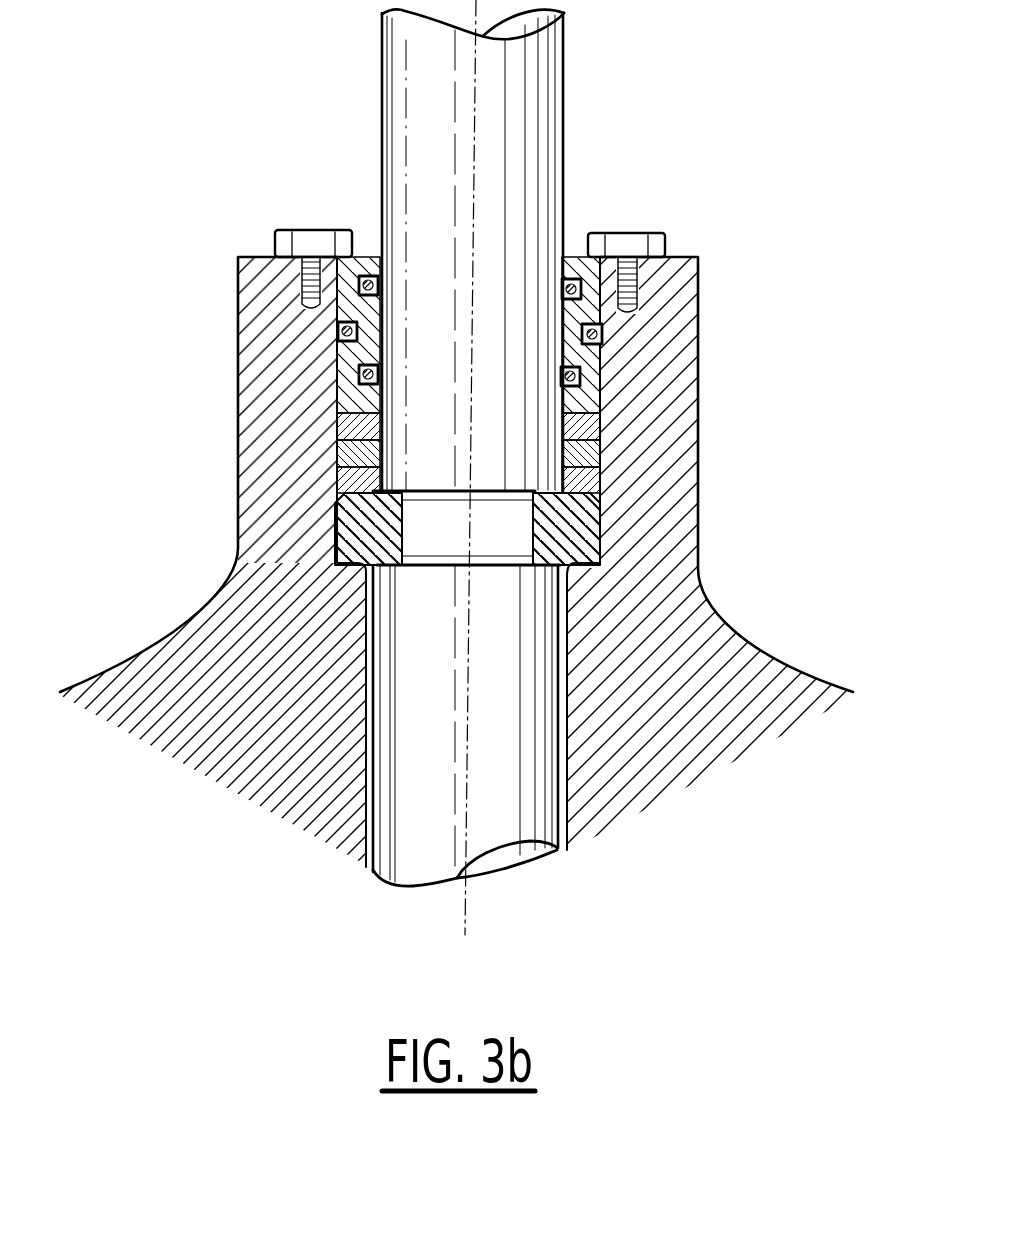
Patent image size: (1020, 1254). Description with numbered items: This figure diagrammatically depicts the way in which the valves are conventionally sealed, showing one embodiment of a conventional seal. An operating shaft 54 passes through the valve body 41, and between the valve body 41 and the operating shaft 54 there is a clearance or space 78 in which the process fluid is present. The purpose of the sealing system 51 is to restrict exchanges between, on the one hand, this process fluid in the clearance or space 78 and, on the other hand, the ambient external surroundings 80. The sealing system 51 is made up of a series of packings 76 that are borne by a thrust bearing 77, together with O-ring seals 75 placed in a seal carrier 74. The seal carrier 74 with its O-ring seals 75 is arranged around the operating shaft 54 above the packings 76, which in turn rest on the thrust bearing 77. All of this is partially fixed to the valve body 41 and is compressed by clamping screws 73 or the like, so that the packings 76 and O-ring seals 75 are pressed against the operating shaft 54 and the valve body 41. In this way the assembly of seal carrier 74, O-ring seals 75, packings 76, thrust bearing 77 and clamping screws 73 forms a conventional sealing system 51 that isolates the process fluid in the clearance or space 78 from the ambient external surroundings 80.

The valve body 41 is at (772, 689).
The sealing system 51 is at (612, 428).
The operating shaft 54 is at (527, 97).
The clamping screws 73 is at (627, 243).
The seal carrier 74 is at (587, 397).
The O-ring seals 75 is at (358, 331).
The packings 76 is at (335, 455).
The thrust bearing 77 is at (588, 533).
The clearance or space 78 is at (560, 670).
The ambient external surroundings 80 is at (353, 146).